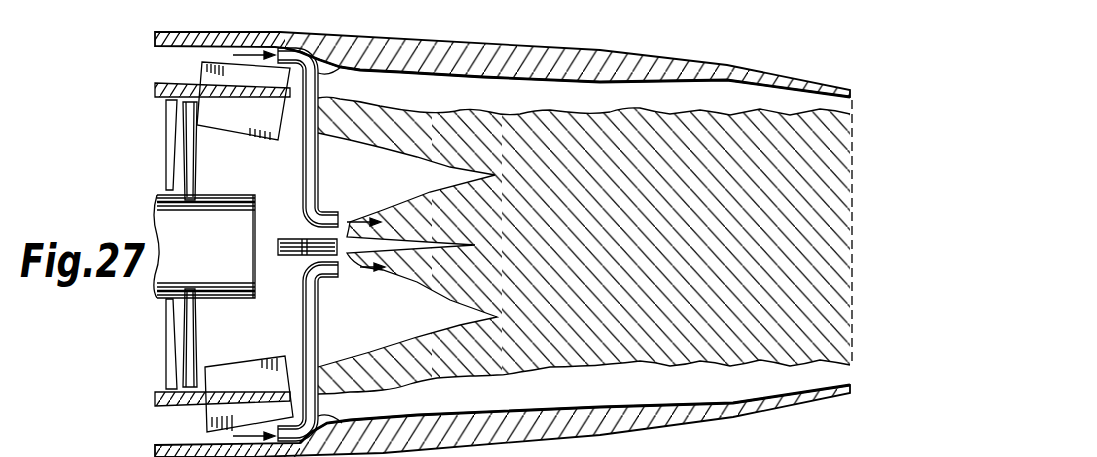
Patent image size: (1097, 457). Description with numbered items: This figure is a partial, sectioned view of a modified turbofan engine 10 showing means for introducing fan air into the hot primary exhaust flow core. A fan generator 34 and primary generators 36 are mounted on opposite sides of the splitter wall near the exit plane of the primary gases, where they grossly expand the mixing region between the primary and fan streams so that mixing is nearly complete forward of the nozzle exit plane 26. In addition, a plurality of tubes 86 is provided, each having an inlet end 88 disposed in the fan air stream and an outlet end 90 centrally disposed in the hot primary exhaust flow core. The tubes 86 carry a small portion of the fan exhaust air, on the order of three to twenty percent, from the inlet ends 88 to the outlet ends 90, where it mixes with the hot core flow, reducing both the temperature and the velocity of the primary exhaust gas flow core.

The engine 10 is at (192, 40).
The nozzle exit plane 26 is at (855, 117).
The fan generator 34 is at (254, 35).
The primary generators 36 is at (195, 118).
The tubes 86 is at (350, 33).
The inlet ends 88 is at (277, 45).
The outlet ends 90 is at (310, 231).